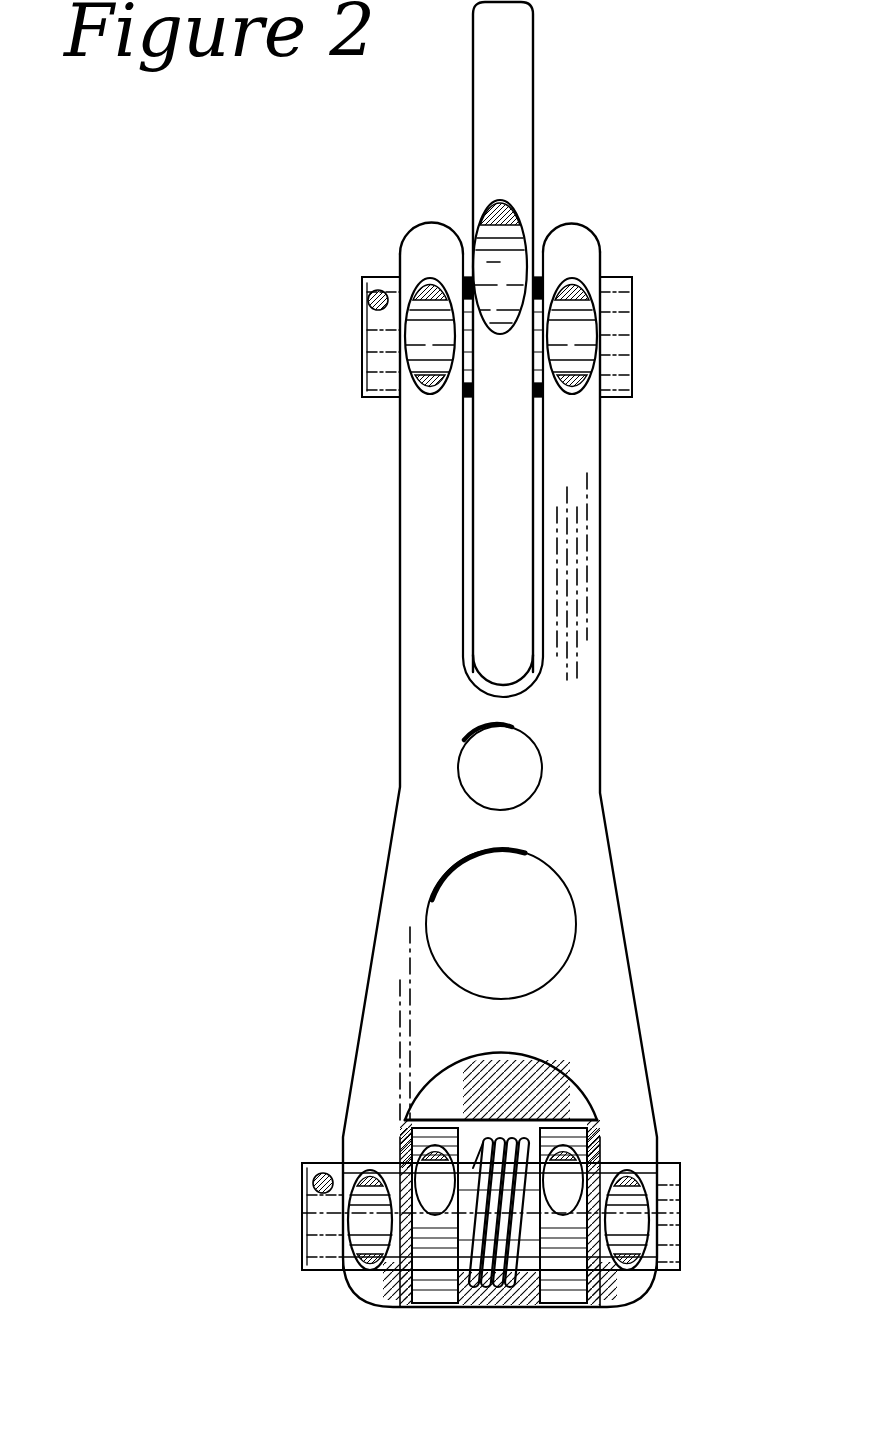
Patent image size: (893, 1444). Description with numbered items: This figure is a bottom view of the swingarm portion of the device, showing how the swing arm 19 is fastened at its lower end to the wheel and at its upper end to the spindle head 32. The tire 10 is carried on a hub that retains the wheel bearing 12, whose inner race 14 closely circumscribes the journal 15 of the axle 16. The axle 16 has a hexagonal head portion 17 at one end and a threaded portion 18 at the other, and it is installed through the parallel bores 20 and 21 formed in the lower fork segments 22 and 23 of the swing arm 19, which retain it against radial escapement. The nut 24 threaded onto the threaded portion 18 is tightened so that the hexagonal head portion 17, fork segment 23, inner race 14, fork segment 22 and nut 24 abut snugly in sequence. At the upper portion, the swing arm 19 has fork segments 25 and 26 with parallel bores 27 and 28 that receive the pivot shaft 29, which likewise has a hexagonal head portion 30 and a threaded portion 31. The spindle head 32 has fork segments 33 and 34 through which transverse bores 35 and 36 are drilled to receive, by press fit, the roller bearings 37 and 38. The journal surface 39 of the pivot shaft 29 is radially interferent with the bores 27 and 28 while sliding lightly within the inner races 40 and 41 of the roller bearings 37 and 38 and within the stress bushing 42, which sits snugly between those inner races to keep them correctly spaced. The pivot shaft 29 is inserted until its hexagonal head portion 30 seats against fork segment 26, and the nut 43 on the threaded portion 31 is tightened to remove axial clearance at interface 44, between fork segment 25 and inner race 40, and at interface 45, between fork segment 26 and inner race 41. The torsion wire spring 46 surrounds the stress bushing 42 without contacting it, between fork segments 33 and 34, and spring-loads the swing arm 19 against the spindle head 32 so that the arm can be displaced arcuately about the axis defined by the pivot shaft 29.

The tire 10 is at (505, 155).
The wheel bearing 12 is at (500, 258).
The inner race 14 is at (468, 372).
The journal 15 is at (428, 287).
The axle 16 is at (569, 313).
The hexagonal head portion 17 is at (618, 322).
The threaded portion 18 is at (377, 300).
The swing arm 19 is at (437, 678).
The parallel bore 20 is at (427, 377).
The parallel bore 21 is at (573, 380).
The fork segment 22 is at (427, 253).
The fork segment 23 is at (592, 257).
The nut 24 is at (373, 371).
The fork segment 25 is at (367, 1150).
The fork segment 26 is at (625, 1150).
The parallel bore 27 is at (372, 1253).
The parallel bore 28 is at (628, 1257).
The pivot shaft 29 is at (635, 1215).
The hexagonal head portion 30 is at (668, 1225).
The threaded portion 31 is at (322, 1183).
The spindle head 32 is at (490, 1128).
The fork segment 33 is at (423, 1220).
The fork segment 34 is at (582, 1232).
The transverse bore 35 is at (435, 1147).
The transverse bore 36 is at (564, 1145).
The roller bearing 37 is at (434, 1192).
The roller bearing 38 is at (563, 1195).
The journal surface 39 is at (366, 1172).
The inner race 40 is at (407, 1180).
The inner race 41 is at (593, 1185).
The stress bushing 42 is at (473, 1168).
The nut 43 is at (323, 1222).
The interface 44 is at (398, 1245).
The interface 45 is at (599, 1248).
The torsion wire spring 46 is at (510, 1123).